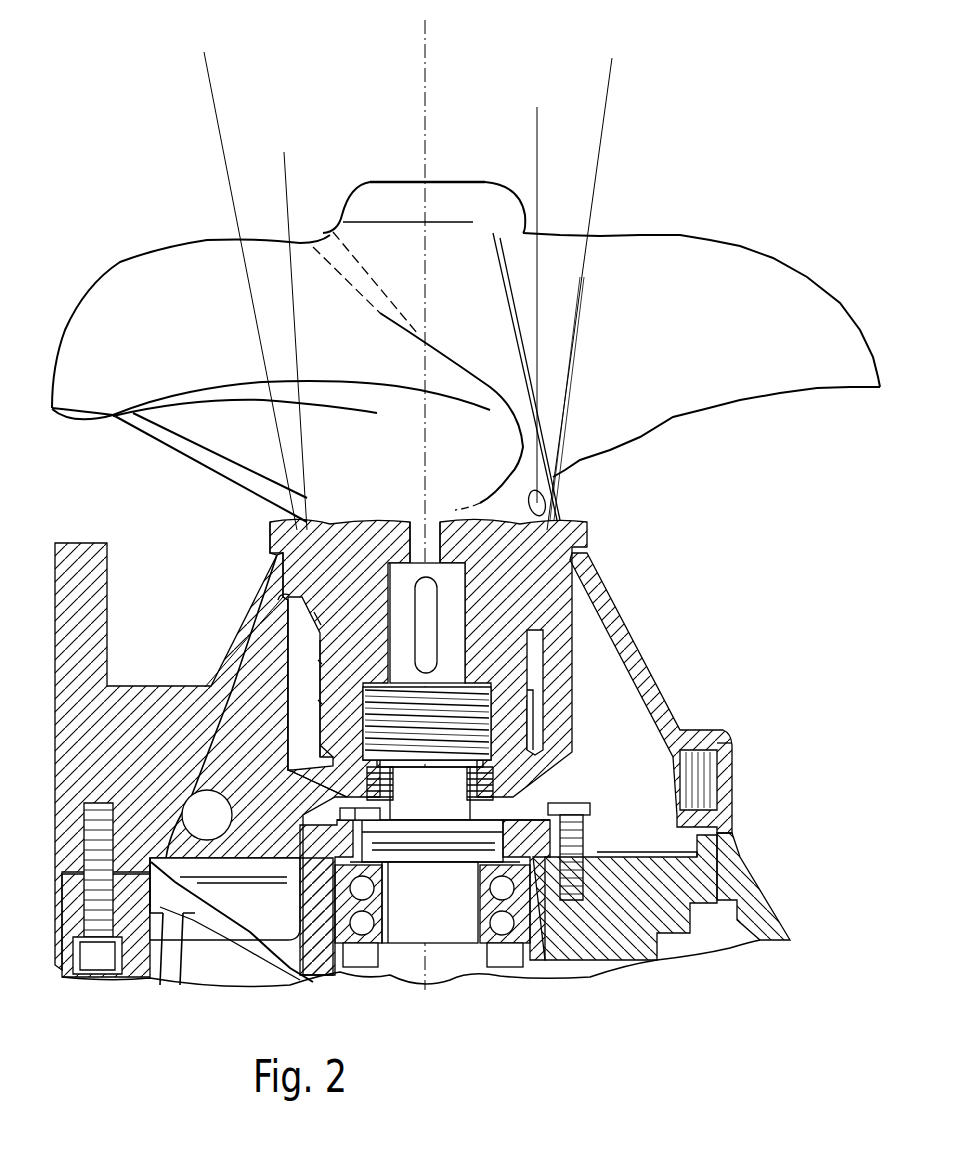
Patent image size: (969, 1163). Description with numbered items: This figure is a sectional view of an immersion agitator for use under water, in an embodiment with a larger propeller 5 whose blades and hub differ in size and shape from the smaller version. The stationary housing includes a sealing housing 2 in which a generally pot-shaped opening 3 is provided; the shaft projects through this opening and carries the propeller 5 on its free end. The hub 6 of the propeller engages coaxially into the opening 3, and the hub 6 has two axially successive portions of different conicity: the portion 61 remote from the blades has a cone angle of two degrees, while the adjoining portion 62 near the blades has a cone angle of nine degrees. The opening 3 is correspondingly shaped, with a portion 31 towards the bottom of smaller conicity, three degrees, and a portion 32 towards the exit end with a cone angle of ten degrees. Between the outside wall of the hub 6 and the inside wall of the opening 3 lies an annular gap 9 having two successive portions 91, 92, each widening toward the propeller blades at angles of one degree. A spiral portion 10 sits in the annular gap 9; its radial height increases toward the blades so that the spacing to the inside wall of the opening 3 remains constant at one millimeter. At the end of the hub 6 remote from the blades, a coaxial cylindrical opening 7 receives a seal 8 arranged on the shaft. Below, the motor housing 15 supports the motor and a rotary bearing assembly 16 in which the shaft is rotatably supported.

The sealing housing 2 is at (747, 740).
The pot-shaped opening 3 is at (320, 698).
The propeller 5 is at (116, 268).
The hub 6 is at (333, 547).
The cylindrical opening 7 is at (545, 742).
The seal 8 is at (352, 745).
The annular gap 9 is at (590, 614).
The spiral portion 10 is at (542, 512).
The motor housing 15 is at (762, 878).
The rotary bearing assembly 16 is at (510, 943).
The portion of the opening towards the bottom 31 is at (320, 733).
The portion of the opening towards the exit end 32 is at (300, 592).
The hub portion remote from the blades 61 is at (347, 663).
The hub portion near the blades 62 is at (333, 575).
The first portion of the annular gap 91 is at (540, 672).
The second portion of the annular gap 92 is at (545, 597).